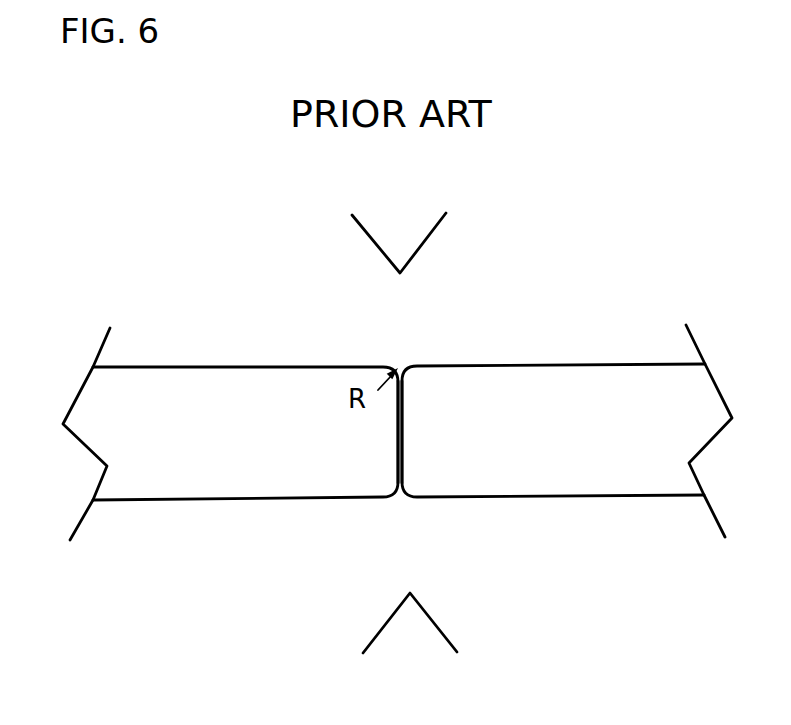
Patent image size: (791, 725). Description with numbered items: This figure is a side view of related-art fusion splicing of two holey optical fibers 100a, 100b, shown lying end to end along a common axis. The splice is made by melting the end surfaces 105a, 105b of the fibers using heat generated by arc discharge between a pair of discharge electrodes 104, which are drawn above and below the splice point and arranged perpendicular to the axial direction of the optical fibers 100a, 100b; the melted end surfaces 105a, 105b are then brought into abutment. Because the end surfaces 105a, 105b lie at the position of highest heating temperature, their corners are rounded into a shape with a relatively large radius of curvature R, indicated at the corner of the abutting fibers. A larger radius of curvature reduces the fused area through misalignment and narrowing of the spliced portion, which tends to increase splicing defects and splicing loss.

The holey optical fiber 100a is at (254, 367).
The holey optical fiber 100b is at (505, 365).
The discharge electrode 104 is at (418, 255).
The end surface 105a is at (402, 425).
The end surface 105b is at (495, 432).